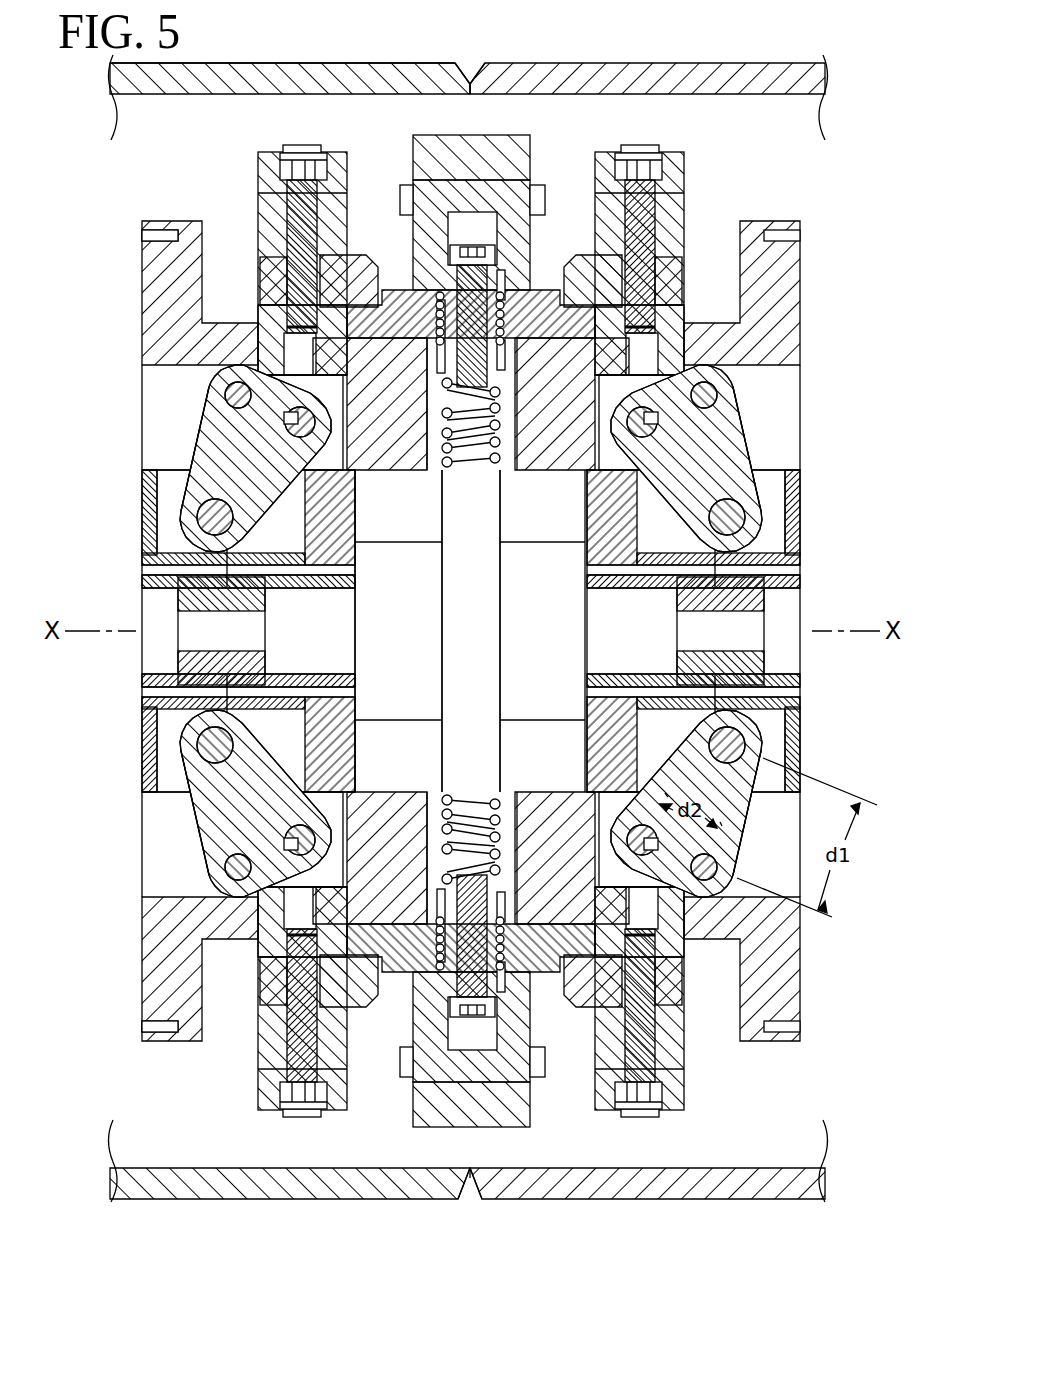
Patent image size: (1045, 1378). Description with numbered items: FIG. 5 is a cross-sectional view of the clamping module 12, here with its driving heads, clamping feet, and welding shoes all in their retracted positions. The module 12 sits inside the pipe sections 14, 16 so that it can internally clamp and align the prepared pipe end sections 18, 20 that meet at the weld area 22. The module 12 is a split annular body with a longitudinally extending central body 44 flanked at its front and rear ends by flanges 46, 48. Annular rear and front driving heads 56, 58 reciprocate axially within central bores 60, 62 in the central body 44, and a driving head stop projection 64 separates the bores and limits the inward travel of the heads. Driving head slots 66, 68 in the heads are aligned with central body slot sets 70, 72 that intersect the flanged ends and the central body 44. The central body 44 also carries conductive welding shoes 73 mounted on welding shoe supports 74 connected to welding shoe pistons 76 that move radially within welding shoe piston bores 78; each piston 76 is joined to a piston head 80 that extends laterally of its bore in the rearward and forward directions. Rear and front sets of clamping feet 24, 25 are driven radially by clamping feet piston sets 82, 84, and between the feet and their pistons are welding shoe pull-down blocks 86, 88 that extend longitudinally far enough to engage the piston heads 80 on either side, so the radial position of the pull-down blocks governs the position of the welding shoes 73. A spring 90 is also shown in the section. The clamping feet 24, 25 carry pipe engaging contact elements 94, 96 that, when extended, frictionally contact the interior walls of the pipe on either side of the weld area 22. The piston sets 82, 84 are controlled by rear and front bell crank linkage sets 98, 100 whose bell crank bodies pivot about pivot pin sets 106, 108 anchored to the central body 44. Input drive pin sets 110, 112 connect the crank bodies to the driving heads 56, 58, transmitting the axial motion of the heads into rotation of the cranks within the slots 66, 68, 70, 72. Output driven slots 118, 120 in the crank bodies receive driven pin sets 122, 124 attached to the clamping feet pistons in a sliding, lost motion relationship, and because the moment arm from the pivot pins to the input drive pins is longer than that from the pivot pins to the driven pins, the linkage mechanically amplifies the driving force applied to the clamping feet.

The clamping module 12 is at (108, 166).
The pipe section 14 is at (606, 63).
The pipe section 16 is at (305, 63).
The pipe end section 18 is at (487, 63).
The pipe end section 20 is at (455, 63).
The weld area 22 is at (470, 75).
The clamping feet 24 is at (684, 165).
The clamping feet 25 is at (258, 165).
The central body 44 is at (172, 325).
The flange 46 is at (797, 221).
The flange 48 is at (145, 228).
The rear driving head 56 is at (802, 692).
The front driving head 58 is at (152, 690).
The central bore 60 is at (527, 641).
The central bore 62 is at (382, 641).
The driving head stop projection 64 is at (457, 641).
The driving head slot 66 is at (777, 540).
The driving head slot 68 is at (165, 505).
The central body slot set 70 is at (772, 380).
The central body slot set 72 is at (160, 380).
The welding shoe 73 is at (450, 135).
The welding shoe support 74 is at (520, 245).
The welding shoe piston 76 is at (505, 470).
The welding shoe piston bore 78 is at (438, 472).
The piston head 80 is at (393, 300).
The clamping feet piston set 82 is at (680, 328).
The clamping feet piston set 84 is at (262, 328).
The welding shoe pull-down block 86 is at (670, 272).
The welding shoe pull-down block 88 is at (272, 272).
The spring 90 is at (472, 458).
The pipe engaging contact element 94 is at (642, 146).
The pipe engaging contact element 96 is at (298, 146).
The rear bell crank linkage set 98 is at (737, 462).
The front bell crank linkage set 100 is at (265, 458).
The pivot pin set 106 is at (714, 400).
The pivot pin set 108 is at (238, 395).
The input drive pin set 110 is at (728, 520).
The input drive pin set 112 is at (215, 520).
The output driven slot 118 is at (747, 432).
The output driven slot 120 is at (298, 420).
The driven pin set 122 is at (645, 392).
The driven pin set 124 is at (240, 500).